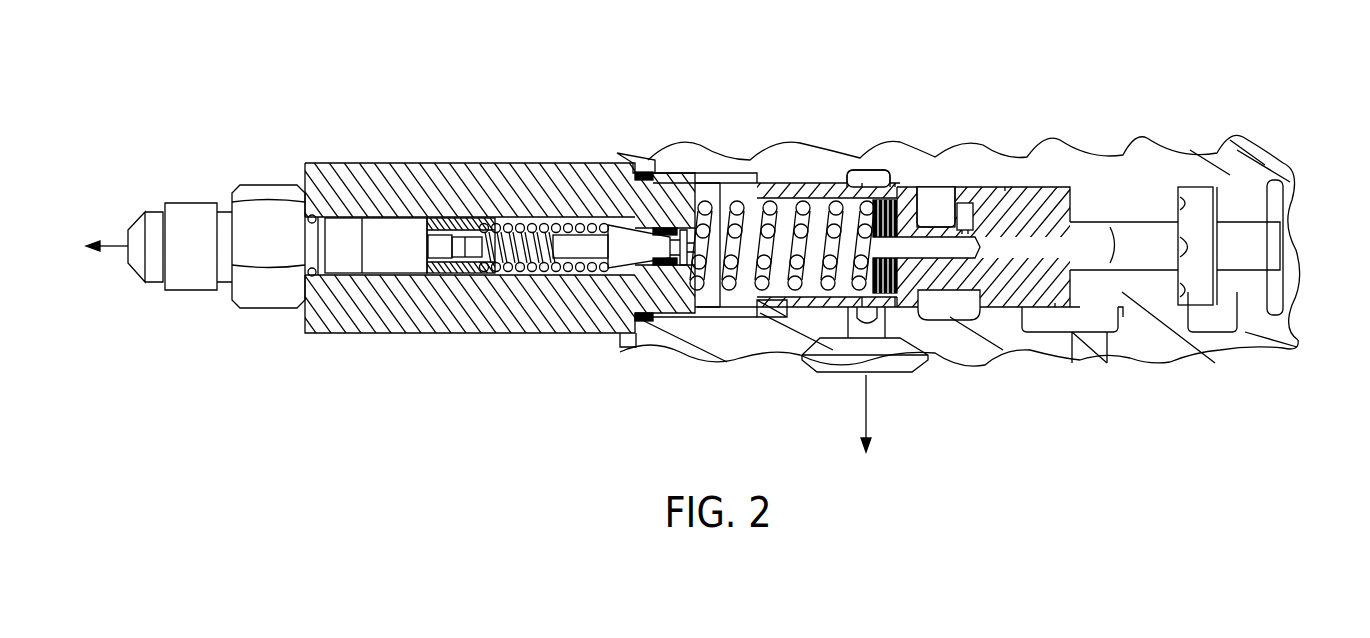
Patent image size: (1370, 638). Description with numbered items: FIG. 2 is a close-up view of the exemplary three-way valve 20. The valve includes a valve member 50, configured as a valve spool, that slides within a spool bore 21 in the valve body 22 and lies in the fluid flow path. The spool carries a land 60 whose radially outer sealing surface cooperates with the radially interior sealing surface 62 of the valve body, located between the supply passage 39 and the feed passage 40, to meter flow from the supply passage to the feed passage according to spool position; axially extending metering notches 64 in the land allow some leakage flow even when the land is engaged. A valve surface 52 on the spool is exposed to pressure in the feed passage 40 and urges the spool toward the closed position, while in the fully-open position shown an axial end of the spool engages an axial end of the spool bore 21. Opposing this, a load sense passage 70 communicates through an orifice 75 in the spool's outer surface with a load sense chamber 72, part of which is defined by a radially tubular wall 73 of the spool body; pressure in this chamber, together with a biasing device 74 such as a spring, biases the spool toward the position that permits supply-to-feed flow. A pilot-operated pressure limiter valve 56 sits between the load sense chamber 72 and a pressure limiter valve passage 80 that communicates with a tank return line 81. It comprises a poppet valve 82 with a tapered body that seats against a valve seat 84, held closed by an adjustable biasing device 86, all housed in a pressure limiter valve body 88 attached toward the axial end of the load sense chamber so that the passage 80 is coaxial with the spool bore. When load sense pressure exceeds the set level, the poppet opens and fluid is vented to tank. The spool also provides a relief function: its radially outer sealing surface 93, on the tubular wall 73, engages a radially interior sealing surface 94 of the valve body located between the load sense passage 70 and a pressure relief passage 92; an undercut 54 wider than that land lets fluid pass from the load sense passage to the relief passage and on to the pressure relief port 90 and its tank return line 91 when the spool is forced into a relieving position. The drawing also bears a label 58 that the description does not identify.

The three-way valve 20 is at (1010, 284).
The spool bore 21 is at (1161, 305).
The valve body 22 is at (672, 352).
The supply passage 39 is at (1097, 322).
The feed passage 40 is at (1250, 185).
The valve member 50 is at (1020, 205).
The valve surface 52 is at (1232, 312).
The undercut 54 is at (962, 200).
The pilot-operated pressure limiter valve 56 is at (638, 281).
The inlet 58 is at (1272, 238).
The land 60 is at (1193, 200).
The radially interior sealing surface 62 is at (1157, 190).
The metering notches 64 is at (1207, 197).
The load sense passage 70 is at (953, 185).
The load sense chamber 72 is at (793, 213).
The radially tubular wall 73 is at (795, 300).
The biasing device 74 is at (757, 297).
The orifice 75 is at (985, 200).
The pressure limiter valve passage 80 is at (617, 240).
The tank return line 81 is at (118, 246).
The poppet valve 82 is at (592, 172).
The valve seat 84 is at (668, 240).
The biasing device 86 is at (513, 268).
The pressure limiter valve body 88 is at (487, 170).
The pressure relief port 90 is at (900, 365).
The tank return line 91 is at (870, 422).
The pressure relief passage 92 is at (867, 318).
The radially outer sealing surface 93 is at (893, 185).
The radially interior sealing surface 94 is at (928, 212).